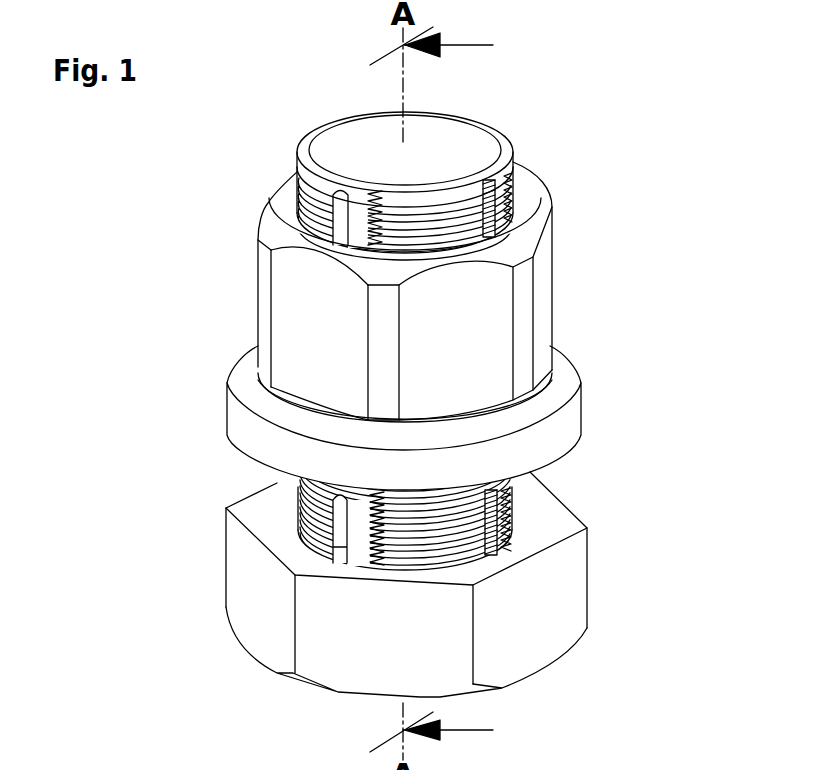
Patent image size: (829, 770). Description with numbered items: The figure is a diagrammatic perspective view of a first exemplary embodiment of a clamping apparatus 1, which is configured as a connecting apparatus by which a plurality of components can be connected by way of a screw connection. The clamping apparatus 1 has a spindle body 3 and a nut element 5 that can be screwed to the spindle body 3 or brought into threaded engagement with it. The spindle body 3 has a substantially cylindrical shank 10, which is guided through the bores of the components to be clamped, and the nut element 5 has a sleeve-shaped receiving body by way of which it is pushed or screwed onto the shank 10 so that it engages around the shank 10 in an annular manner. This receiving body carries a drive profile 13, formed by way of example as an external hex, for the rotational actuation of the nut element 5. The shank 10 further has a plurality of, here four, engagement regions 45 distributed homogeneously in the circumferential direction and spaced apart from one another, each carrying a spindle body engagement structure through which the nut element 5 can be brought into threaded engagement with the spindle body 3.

The clamping apparatus 1 is at (641, 68).
The spindle body 3 is at (435, 132).
The nut element 5 is at (396, 286).
The shank 10 is at (500, 197).
The drive profile 13 is at (325, 305).
The engagement regions 45 is at (305, 488).